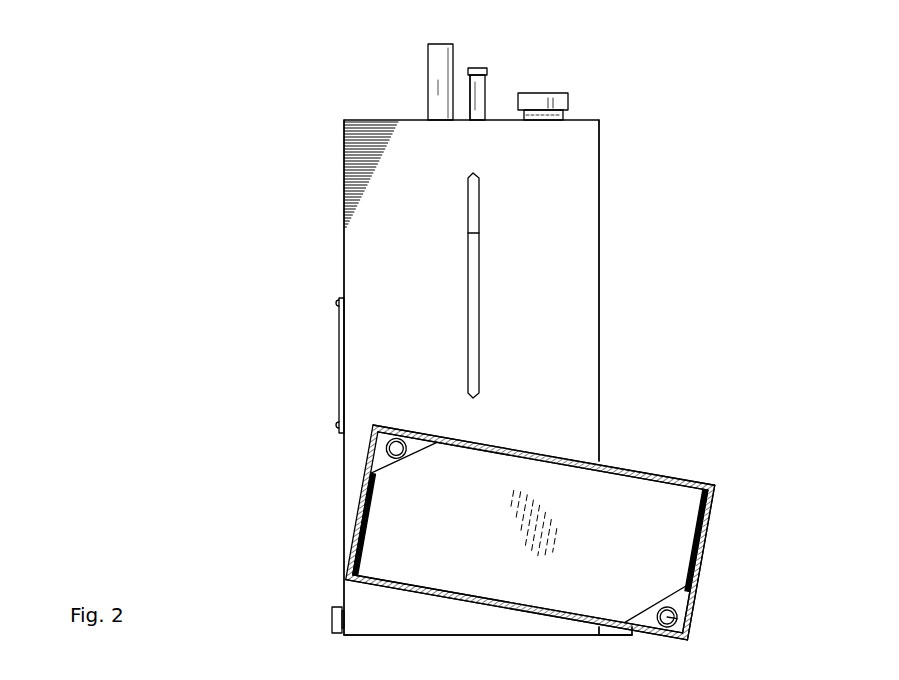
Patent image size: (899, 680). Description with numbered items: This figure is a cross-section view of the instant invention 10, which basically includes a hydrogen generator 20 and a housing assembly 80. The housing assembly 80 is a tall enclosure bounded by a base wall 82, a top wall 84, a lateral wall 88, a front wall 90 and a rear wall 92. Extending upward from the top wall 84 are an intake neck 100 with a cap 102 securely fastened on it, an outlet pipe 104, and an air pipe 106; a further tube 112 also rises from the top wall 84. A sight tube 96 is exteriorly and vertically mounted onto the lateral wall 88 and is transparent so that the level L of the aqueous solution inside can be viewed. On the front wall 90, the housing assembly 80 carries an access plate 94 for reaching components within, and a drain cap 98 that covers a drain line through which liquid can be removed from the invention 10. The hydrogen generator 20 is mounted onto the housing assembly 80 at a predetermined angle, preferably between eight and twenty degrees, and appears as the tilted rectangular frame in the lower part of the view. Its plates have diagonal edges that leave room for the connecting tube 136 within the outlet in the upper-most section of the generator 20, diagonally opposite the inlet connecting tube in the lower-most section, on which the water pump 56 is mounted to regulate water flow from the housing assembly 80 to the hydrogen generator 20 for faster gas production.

The instant invention 10 is at (205, 88).
The hydrogen generator 20 is at (566, 511).
The water pump 56 is at (610, 637).
The housing assembly 80 is at (606, 219).
The base wall 82 is at (385, 637).
The top wall 84 is at (388, 120).
The lateral wall 88 is at (420, 236).
The front wall 90 is at (344, 235).
The rear wall 92 is at (600, 261).
The access plate 94 is at (338, 330).
The sight tube 96 is at (479, 298).
The drain cap 98 is at (332, 620).
The intake neck 100 is at (568, 117).
The cap 102 is at (568, 100).
The outlet pipe 104 is at (428, 72).
The air pipe 106 is at (487, 82).
The vent tube 112 is at (487, 68).
The connecting tube 136 is at (378, 430).
The level L is at (470, 230).